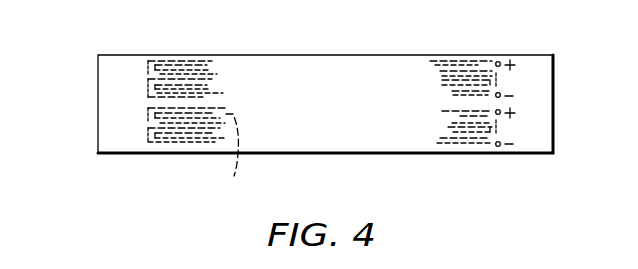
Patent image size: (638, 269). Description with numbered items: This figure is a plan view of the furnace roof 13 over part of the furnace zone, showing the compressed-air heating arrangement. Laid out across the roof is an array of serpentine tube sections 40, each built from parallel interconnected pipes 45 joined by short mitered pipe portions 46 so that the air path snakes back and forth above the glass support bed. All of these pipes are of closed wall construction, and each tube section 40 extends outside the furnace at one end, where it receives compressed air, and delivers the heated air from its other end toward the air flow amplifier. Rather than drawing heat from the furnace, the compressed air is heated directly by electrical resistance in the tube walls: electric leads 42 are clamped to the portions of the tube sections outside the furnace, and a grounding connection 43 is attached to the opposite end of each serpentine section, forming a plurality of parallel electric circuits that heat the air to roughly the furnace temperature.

The furnace roof 13 is at (97, 62).
The tube section 40 is at (140, 70).
The electric lead 42 is at (500, 62).
The grounding connection 43 is at (500, 93).
The parallel interconnected pipes 45 is at (232, 154).
The mitered pipe portions 46 is at (148, 111).